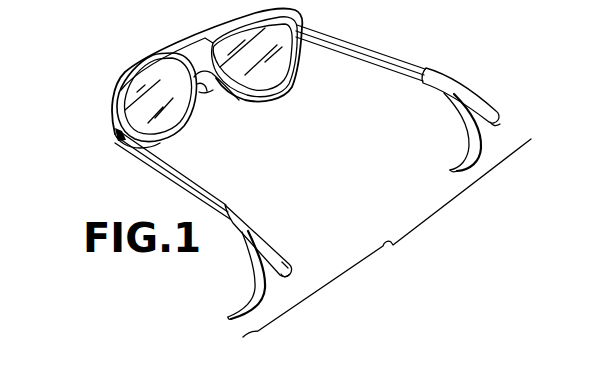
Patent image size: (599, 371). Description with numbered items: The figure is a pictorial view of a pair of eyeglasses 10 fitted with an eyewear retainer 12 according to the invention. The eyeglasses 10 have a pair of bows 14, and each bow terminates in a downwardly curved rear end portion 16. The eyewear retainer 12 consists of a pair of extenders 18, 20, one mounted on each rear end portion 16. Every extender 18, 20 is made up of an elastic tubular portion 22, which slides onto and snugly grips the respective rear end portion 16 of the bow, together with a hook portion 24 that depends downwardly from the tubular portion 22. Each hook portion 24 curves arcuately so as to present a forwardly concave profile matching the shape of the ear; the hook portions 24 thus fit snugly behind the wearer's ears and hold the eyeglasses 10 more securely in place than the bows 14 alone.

The eyeglasses 10 is at (94, 80).
The eyewear retainer 12 is at (387, 238).
The bows 14 is at (363, 43).
The rear end portion 16 is at (502, 128).
The extender 18 is at (287, 257).
The extender 20 is at (462, 115).
The elastic tubular portion 22 is at (480, 100).
The hook portion 24 is at (454, 164).